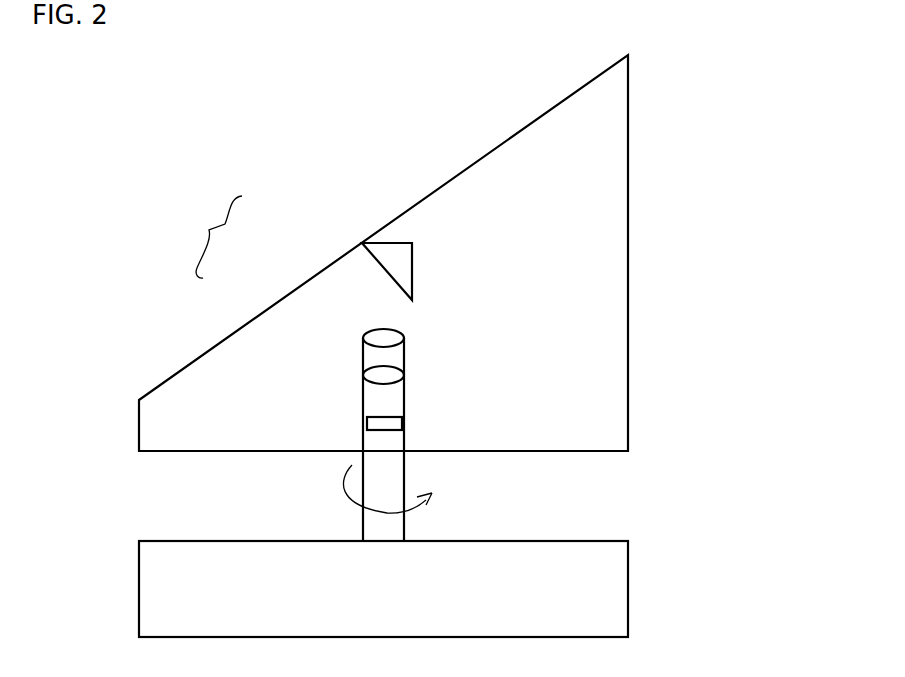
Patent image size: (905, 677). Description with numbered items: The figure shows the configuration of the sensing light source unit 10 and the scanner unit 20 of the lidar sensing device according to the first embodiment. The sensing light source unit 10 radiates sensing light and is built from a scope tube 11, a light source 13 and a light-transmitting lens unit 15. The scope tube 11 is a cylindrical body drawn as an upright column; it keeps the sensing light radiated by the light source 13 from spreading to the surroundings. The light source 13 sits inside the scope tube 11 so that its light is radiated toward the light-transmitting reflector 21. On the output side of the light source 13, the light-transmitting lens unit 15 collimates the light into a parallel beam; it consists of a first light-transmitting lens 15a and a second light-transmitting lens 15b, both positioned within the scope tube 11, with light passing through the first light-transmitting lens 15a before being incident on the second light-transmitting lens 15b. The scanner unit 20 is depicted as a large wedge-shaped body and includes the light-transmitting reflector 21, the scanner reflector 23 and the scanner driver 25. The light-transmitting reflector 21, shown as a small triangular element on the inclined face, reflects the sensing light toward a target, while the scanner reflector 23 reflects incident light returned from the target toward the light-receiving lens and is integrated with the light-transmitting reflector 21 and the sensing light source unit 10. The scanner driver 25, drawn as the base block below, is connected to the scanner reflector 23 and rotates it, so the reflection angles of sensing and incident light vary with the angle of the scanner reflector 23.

The sensing light source unit 10 is at (360, 420).
The scope tube 11 is at (404, 385).
The light source 13 is at (383, 427).
The light-transmitting lens unit 15 is at (207, 237).
The first light-transmitting lens 15a is at (378, 375).
The second light-transmitting lens 15b is at (378, 337).
The scanner unit 20 is at (648, 260).
The light-transmitting reflector 21 is at (413, 262).
The scanner reflector 23 is at (628, 423).
The scanner driver 25 is at (628, 578).